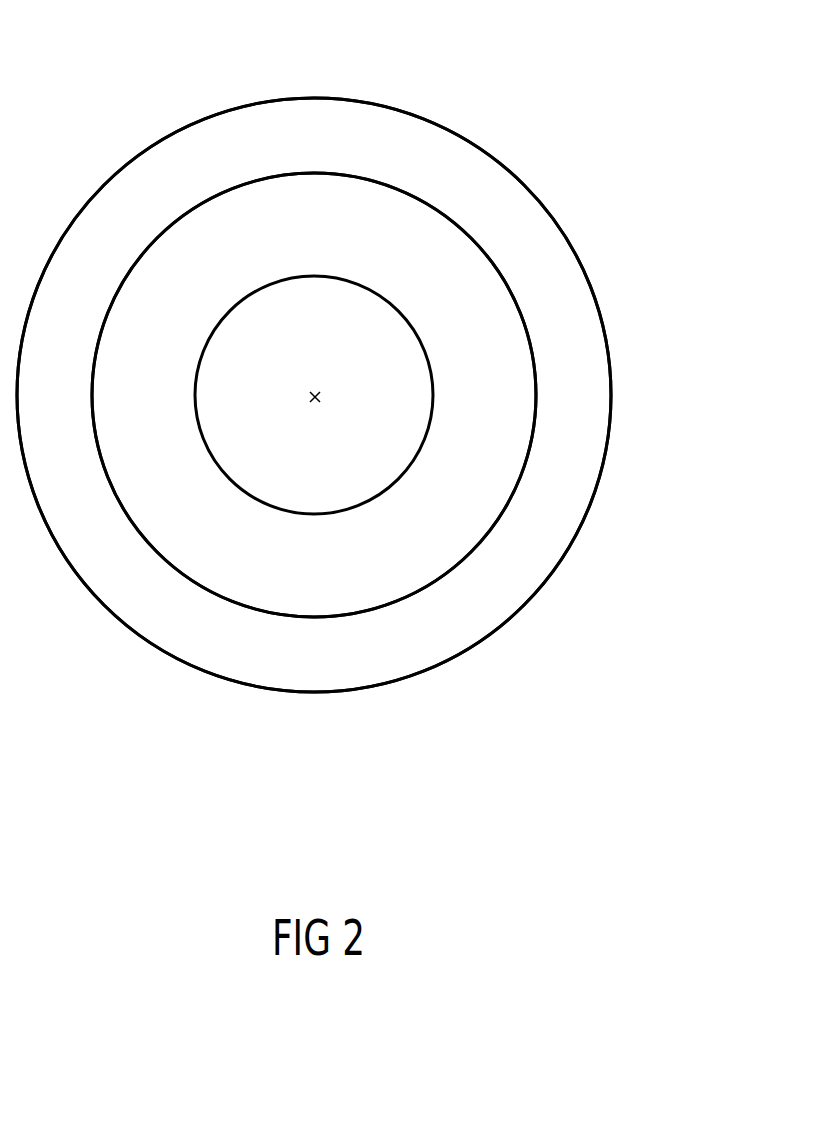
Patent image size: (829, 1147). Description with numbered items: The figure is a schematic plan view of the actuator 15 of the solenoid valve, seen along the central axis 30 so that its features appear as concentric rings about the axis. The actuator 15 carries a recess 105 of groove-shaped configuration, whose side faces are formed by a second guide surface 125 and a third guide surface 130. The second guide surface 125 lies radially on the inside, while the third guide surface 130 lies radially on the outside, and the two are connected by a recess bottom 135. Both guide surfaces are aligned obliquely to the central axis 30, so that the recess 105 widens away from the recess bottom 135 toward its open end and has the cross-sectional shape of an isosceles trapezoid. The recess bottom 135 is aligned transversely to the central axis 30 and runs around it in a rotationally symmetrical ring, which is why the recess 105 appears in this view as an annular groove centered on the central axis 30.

The actuator 15 is at (368, 740).
The central axis 30 is at (315, 397).
The recess 105 is at (437, 287).
The second guide surface 125 is at (433, 380).
The third guide surface 130 is at (503, 277).
The recess bottom 135 is at (338, 228).